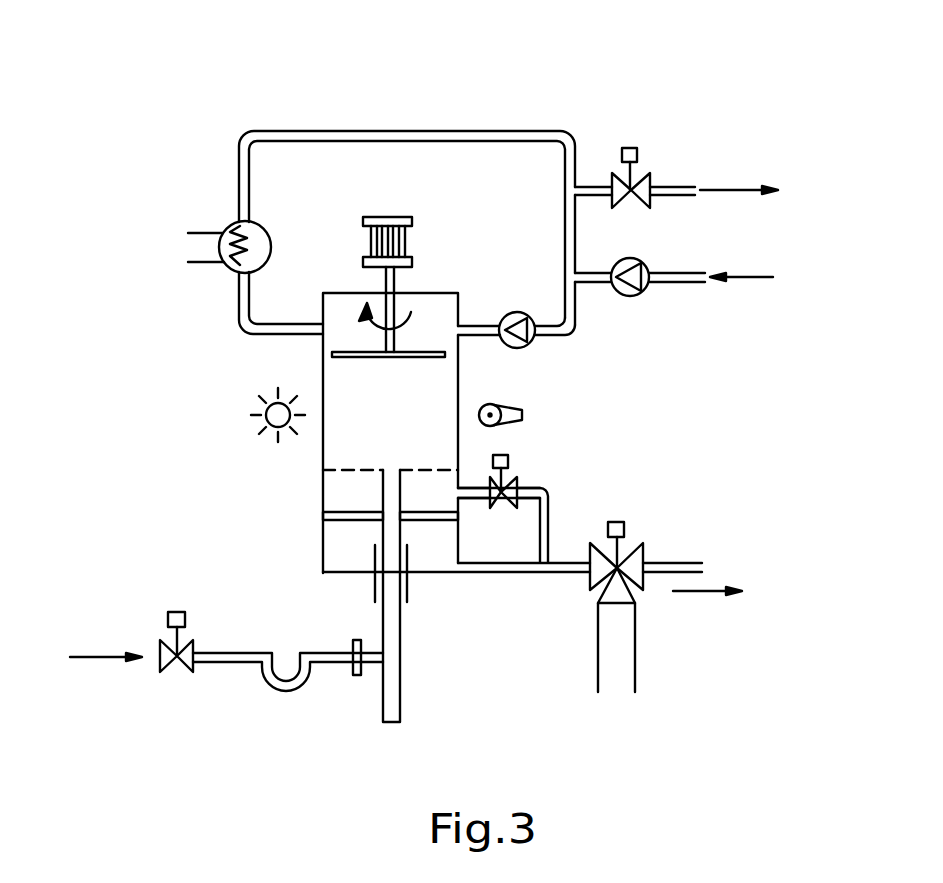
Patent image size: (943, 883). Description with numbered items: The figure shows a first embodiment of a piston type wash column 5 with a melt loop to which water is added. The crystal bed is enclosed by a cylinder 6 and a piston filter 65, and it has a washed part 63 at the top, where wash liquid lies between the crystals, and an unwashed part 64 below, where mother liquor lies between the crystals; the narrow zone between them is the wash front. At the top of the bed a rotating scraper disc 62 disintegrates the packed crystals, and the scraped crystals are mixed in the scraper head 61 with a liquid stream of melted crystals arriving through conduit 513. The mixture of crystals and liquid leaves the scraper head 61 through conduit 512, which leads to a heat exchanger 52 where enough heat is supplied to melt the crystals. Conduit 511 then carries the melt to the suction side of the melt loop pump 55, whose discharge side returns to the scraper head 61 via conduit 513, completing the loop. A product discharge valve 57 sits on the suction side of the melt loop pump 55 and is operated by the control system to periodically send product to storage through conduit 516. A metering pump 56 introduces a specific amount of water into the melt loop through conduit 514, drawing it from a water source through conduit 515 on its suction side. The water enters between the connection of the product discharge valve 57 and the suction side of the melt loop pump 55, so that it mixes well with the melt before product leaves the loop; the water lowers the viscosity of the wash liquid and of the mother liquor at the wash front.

The wash column 5 is at (250, 86).
The cylinder 6 is at (323, 461).
The scraper head 61 is at (357, 333).
The rotating scraper disc 62 is at (352, 355).
The washed part of the crystal bed 63 is at (373, 418).
The unwashed part of the crystal bed 64 is at (372, 483).
The piston filter 65 is at (352, 520).
The conduit 511 is at (418, 132).
The conduit 512 is at (242, 323).
The conduit 513 is at (472, 337).
The conduit 514 is at (593, 283).
The conduit 515 is at (695, 283).
The conduit 516 is at (677, 190).
The heat exchanger 52 is at (230, 228).
The melt loop pump 55 is at (527, 340).
The metering pump 56 is at (645, 292).
The product discharge valve 57 is at (642, 177).